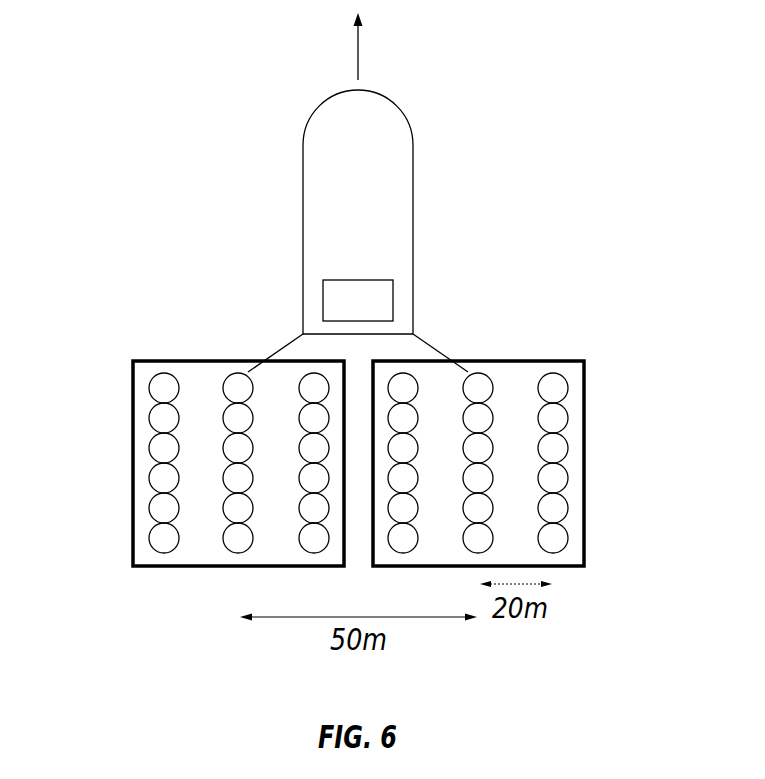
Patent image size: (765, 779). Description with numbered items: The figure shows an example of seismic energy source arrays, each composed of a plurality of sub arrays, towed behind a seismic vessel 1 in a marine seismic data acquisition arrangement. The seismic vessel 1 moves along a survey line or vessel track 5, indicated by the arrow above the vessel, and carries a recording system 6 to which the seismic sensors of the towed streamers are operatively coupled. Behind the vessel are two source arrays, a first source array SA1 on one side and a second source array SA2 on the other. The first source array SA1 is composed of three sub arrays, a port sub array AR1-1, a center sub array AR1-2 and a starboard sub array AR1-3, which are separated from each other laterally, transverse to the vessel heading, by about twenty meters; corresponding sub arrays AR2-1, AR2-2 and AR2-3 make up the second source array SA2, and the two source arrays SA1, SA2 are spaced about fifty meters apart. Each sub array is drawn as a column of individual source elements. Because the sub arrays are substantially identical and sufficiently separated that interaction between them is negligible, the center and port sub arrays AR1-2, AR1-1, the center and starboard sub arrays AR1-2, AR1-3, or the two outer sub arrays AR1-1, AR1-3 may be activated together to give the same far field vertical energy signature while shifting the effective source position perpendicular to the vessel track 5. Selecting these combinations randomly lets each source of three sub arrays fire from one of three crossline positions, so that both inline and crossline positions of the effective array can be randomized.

The seismic vessel (SEV) 1 is at (413, 190).
The survey line / vessel track 5 is at (358, 55).
The recording system 6 is at (393, 300).
The first source array SA1 is at (201, 463).
The second source array SA2 is at (513, 463).
The port sub array AR1-1 is at (164, 553).
The center sub array AR1-2 is at (238, 553).
The starboard sub array AR1-3 is at (314, 553).
The first sub array of second source array AR2-1 is at (403, 553).
The second sub array of second source array AR2-2 is at (478, 553).
The third sub array of second source array AR2-3 is at (553, 553).